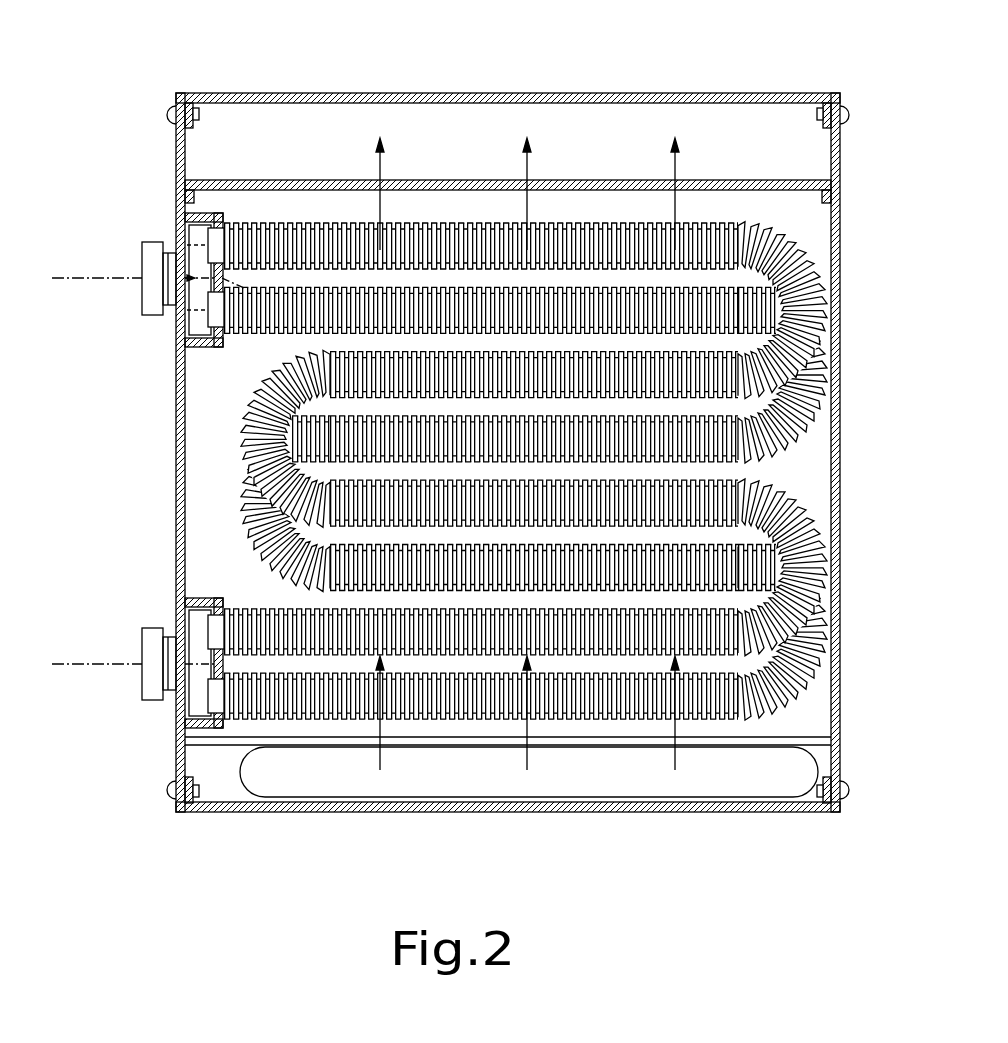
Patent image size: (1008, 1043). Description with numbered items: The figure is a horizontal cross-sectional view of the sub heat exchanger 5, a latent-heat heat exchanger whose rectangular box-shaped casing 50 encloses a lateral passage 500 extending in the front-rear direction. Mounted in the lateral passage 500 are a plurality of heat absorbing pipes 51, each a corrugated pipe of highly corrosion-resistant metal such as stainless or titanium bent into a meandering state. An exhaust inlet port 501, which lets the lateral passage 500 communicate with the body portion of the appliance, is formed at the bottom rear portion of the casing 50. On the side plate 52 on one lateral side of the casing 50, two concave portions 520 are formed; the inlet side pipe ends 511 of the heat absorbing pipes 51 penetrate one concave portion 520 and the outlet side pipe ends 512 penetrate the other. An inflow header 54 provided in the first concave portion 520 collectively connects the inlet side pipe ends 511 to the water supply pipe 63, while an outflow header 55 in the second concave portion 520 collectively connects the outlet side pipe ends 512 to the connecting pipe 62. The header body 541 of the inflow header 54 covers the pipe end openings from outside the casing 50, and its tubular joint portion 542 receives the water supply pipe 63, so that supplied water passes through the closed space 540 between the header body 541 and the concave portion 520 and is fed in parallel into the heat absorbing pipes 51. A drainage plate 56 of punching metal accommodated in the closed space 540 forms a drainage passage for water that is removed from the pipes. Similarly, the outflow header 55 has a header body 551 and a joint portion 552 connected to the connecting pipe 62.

The sub heat exchanger 5 is at (553, 71).
The casing 50 is at (767, 93).
The heat absorbing pipe 51 is at (612, 312).
The side plate 52 is at (176, 150).
The inflow header 54 is at (139, 297).
The outflow header 55 is at (139, 680).
The drainage plate 56 is at (240, 282).
The connecting pipe 62 is at (83, 656).
The water supply pipe 63 is at (95, 277).
The lateral passage 500 is at (233, 486).
The exhaust inlet port 501 is at (463, 764).
The inlet side pipe end 511 is at (200, 213).
The outlet side pipe end 512 is at (205, 600).
The concave portion 520 is at (177, 337).
The closed space 540 is at (163, 277).
The header body 541 is at (177, 322).
The joint portion 542 is at (155, 241).
The header body 551 is at (177, 708).
The joint portion 552 is at (150, 628).